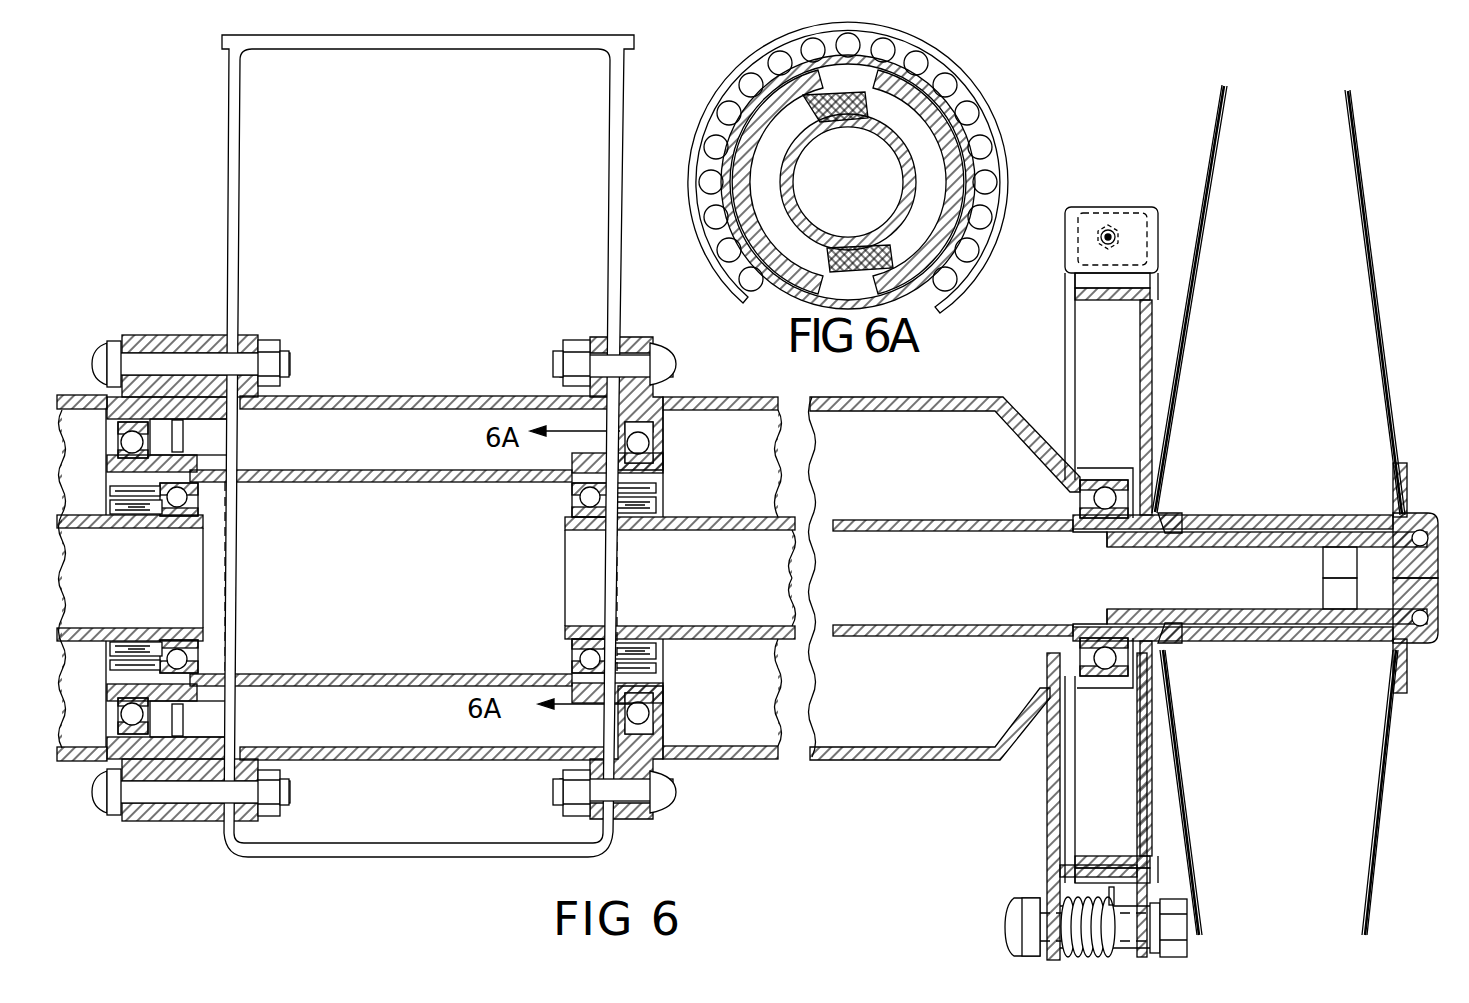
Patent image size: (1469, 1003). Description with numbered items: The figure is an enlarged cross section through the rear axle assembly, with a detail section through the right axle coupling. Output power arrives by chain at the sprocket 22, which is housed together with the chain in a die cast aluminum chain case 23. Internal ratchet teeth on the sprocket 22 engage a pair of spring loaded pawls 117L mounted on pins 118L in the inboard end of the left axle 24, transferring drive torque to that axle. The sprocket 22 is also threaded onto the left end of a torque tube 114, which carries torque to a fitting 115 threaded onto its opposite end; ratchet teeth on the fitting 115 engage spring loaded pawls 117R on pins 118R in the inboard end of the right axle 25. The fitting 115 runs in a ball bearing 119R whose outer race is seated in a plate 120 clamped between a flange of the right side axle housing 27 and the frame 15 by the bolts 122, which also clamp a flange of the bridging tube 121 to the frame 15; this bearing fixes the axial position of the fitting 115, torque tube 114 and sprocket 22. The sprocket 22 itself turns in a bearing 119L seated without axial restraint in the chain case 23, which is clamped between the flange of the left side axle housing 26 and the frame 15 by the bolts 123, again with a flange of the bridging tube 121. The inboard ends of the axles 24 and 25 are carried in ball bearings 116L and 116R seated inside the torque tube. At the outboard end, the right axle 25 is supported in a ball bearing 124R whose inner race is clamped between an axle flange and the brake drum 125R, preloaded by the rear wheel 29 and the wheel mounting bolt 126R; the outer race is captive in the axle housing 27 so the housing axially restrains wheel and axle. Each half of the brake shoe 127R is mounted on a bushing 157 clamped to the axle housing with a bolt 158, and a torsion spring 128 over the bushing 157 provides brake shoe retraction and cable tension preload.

In FIG. 6, the frame 15 is at (243, 148).
In FIG. 6, the sprocket 22 is at (185, 440).
In FIG. 6, the chain case 23 is at (187, 333).
In FIG. 6, the left axle 24 is at (84, 622).
In FIG. 6, the right axle 25 is at (676, 631).
In FIG. 6A, the right axle 25 is at (904, 207).
In FIG. 6, the left side axle housing 26 is at (86, 406).
In FIG. 6, the right side axle housing 27 is at (882, 407).
In FIG. 6, the rear wheel 29 is at (1213, 141).
In FIG. 6, the torque tube 114 is at (351, 482).
In FIG. 6, the fitting 115 is at (663, 478).
In FIG. 6A, the fitting 115 is at (962, 202).
In FIG. 6, the ball bearing 116L is at (182, 498).
In FIG. 6, the ball bearing 116R is at (573, 498).
In FIG. 6, the spring loaded pawls 117L is at (133, 515).
In FIG. 6, the spring loaded pawls 117R is at (625, 512).
In FIG. 6A, the spring loaded pawls 117R is at (865, 112).
In FIG. 6, the pins 118L is at (145, 515).
In FIG. 6, the pins 118R is at (623, 512).
In FIG. 6A, the pins 118R is at (960, 97).
In FIG. 6, the ball bearing 119L is at (136, 442).
In FIG. 6, the ball bearing 119R is at (650, 444).
In FIG. 6A, the ball bearing 119R is at (980, 148).
In FIG. 6, the plate 120 is at (630, 337).
In FIG. 6, the bridging tube 121 is at (347, 397).
In FIG. 6, the bolts 122 is at (640, 366).
In FIG. 6, the bolts 123 is at (243, 360).
In FIG. 6, the ball bearing 124R is at (1100, 502).
In FIG. 6, the brake drum 125R is at (1108, 300).
In FIG. 6, the wheel mounting bolt 126R is at (1405, 555).
In FIG. 6, the brake shoe 127R is at (1098, 207).
In FIG. 6, the torsion spring 128 is at (1057, 890).
In FIG. 6, the bushing 157 is at (1135, 895).
In FIG. 6, the bolt 158 is at (1170, 893).